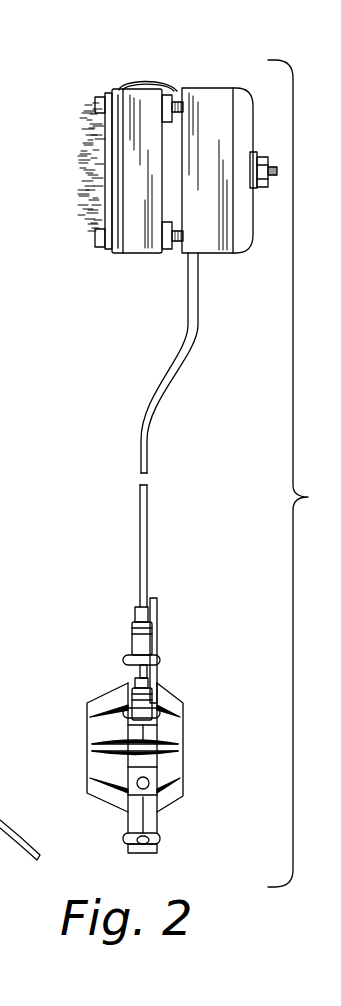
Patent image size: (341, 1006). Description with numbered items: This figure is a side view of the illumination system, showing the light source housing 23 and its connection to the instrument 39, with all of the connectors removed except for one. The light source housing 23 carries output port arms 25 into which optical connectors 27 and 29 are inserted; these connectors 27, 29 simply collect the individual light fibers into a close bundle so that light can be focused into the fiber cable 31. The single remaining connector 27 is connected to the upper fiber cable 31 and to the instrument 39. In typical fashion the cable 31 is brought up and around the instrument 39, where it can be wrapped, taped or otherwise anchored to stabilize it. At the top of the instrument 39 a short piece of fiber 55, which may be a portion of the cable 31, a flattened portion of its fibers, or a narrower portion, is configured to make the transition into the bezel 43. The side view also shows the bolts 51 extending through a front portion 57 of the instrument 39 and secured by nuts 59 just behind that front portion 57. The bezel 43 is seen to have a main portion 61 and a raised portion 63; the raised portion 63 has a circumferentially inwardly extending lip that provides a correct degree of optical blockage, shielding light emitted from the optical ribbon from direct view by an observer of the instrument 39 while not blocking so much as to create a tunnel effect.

The light source housing 23 is at (190, 762).
The output port arms 25 is at (160, 826).
The optical connector 27 is at (155, 640).
The optical connector 29 is at (20, 817).
The fiber cable 31 is at (152, 438).
The instrument 39 is at (221, 77).
The bezel 43 is at (120, 258).
The bolts 51 is at (95, 104).
The short piece of fiber 55 is at (147, 80).
The front portion 57 is at (142, 258).
The nuts 59 is at (168, 88).
The main portion 61 is at (118, 132).
The raised portion 63 is at (105, 183).